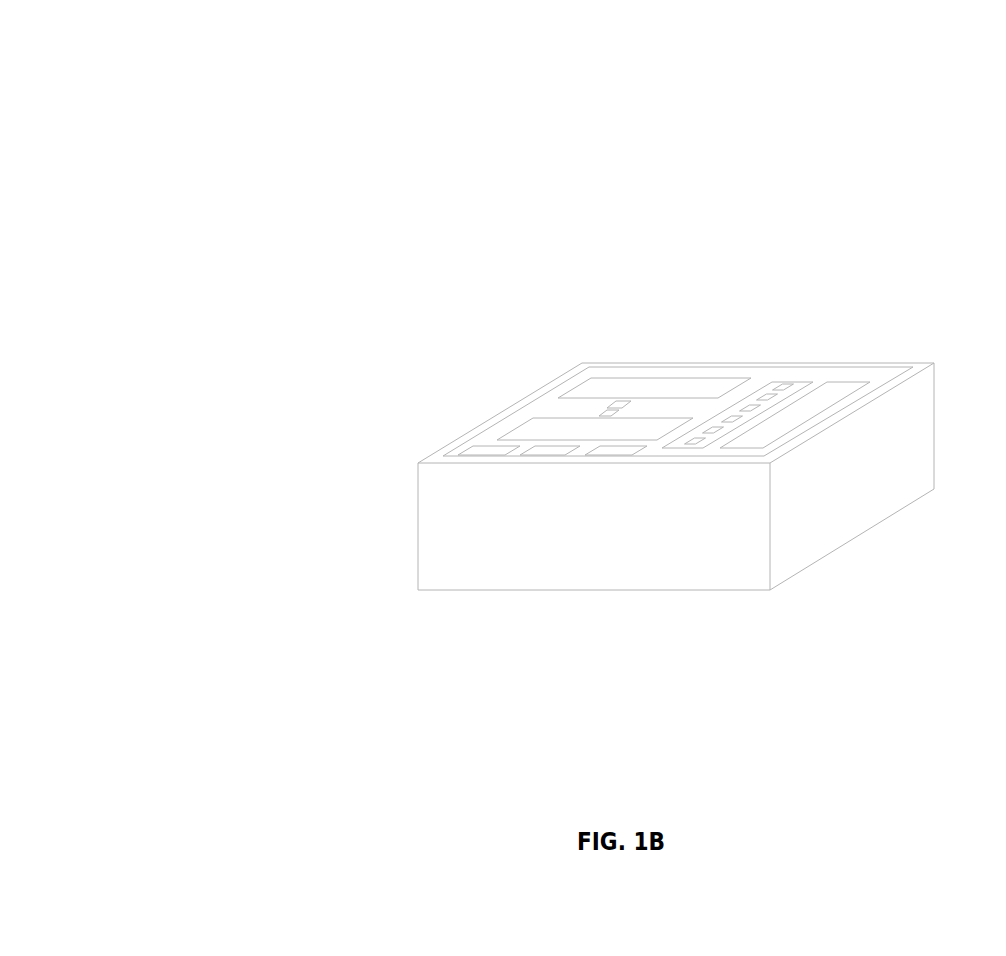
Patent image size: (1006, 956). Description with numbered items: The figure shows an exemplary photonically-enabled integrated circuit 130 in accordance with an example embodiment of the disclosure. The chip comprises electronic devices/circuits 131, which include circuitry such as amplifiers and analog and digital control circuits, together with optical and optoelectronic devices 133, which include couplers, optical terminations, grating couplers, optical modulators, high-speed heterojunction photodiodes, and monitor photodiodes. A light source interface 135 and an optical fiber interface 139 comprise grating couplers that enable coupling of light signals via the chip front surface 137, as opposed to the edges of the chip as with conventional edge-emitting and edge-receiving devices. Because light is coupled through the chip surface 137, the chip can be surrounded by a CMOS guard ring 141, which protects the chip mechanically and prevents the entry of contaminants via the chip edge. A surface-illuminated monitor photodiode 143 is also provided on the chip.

The photonically-enabled integrated circuit 130 is at (278, 116).
The electronic devices/circuits 131 is at (612, 455).
The optical and optoelectronic devices 133 is at (656, 395).
The light source interface 135 is at (630, 401).
The chip front surface 137 is at (710, 372).
The optical fiber interface 139 is at (793, 380).
The CMOS guard ring 141 is at (920, 366).
The surface-illuminated monitor photodiode 143 is at (600, 412).